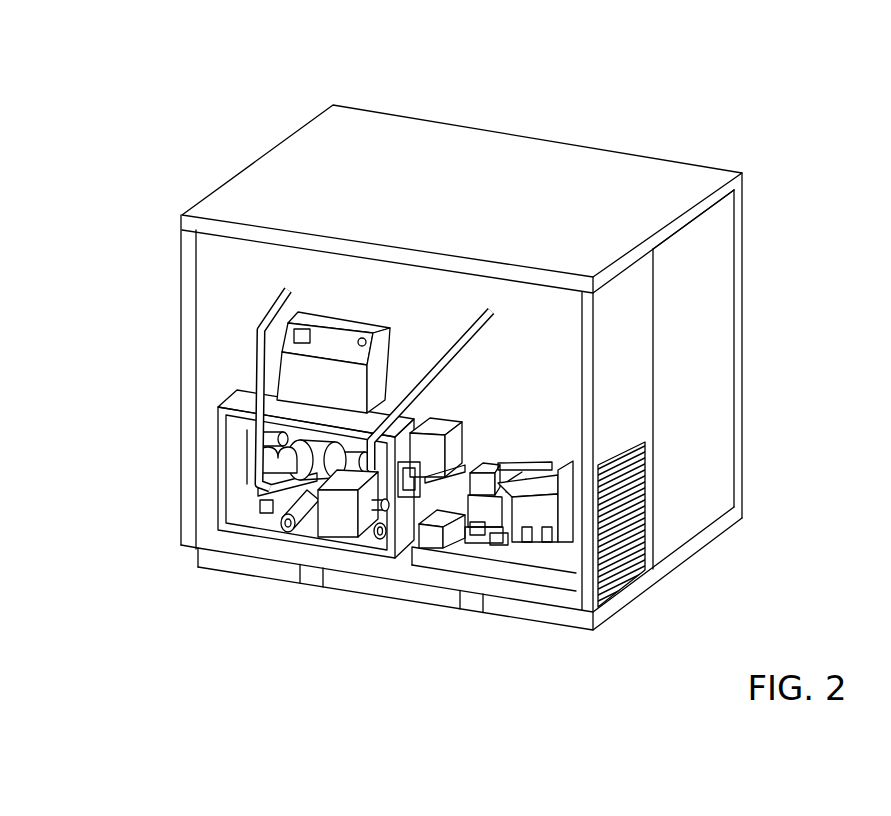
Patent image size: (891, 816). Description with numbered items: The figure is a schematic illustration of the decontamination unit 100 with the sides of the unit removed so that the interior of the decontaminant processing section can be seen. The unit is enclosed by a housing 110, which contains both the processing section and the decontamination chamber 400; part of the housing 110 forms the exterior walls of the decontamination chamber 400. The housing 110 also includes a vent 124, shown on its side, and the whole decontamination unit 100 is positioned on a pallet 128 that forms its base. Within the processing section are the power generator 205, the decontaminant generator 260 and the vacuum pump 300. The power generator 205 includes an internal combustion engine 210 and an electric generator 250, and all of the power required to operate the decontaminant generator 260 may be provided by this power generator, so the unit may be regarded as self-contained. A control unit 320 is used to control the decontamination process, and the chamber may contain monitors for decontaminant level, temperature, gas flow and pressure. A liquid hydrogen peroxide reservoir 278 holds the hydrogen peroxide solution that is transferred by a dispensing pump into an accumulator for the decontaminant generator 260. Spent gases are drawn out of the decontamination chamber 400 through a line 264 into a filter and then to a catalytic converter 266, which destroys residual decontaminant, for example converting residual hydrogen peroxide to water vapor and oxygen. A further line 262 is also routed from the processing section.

The decontamination unit 100 is at (539, 110).
The housing 110 is at (614, 153).
The vent 124 is at (621, 547).
The pallet 128 is at (223, 562).
The power generator 205 is at (443, 530).
The internal combustion engine 210 is at (527, 527).
The electric generator 250 is at (490, 513).
The decontaminant generator 260 is at (265, 462).
The inlet hose 262 is at (252, 290).
The line 264 is at (502, 330).
The catalytic converter 266 is at (335, 520).
The liquid hydrogen peroxide reservoir 278 is at (436, 428).
The vacuum pump 300 is at (312, 458).
The control unit 320 is at (337, 345).
The decontamination chamber 400 is at (700, 354).